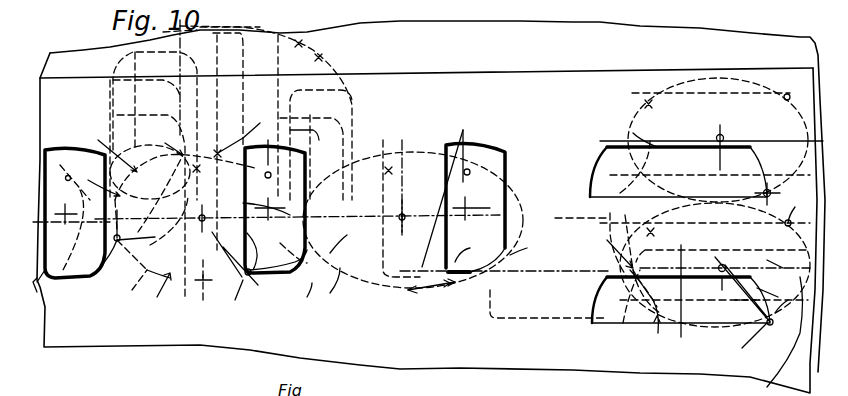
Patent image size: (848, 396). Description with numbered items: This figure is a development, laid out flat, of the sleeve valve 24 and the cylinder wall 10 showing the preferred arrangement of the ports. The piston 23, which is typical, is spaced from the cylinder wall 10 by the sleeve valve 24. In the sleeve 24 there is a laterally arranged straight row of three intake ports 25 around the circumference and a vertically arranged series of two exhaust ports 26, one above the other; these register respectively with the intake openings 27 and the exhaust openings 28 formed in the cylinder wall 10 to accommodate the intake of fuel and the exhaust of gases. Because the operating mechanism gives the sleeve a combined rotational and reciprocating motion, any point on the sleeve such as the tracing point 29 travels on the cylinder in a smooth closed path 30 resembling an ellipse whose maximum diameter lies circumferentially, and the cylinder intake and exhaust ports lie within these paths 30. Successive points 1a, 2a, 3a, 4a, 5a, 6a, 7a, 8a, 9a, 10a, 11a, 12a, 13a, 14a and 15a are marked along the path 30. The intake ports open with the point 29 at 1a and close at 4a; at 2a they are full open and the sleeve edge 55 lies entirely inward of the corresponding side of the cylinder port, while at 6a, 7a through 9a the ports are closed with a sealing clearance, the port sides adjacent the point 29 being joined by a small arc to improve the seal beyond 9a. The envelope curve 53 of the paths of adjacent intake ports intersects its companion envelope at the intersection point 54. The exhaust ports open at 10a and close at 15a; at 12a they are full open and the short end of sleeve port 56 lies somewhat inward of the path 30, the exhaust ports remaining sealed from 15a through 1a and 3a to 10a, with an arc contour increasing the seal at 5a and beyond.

The cylinder wall 10 is at (383, 35).
The piston 23 is at (311, 129).
The sleeve valve 24 is at (207, 340).
The intake ports 25 is at (63, 150).
The exhaust ports 26 is at (610, 150).
The intake openings 27 is at (197, 124).
The exhaust openings 28 is at (646, 103).
The tracing point 29 is at (253, 277).
The path 30 is at (714, 329).
The envelope curve 53 is at (298, 43).
The intersection point 54 is at (352, 52).
The sleeve edge 55 is at (468, 265).
The short end of sleeve port 56 is at (748, 307).
The point on path 1a is at (496, 321).
The point on path 2a is at (194, 298).
The point on path 3a is at (657, 320).
The point on path 4a is at (66, 271).
The point on path 5a is at (607, 250).
The point on path 6a is at (96, 181).
The point on path 7a is at (110, 151).
The point on path 8a is at (164, 146).
The point on path 9a is at (242, 138).
The point on path 10a is at (800, 208).
The point on path 11a is at (255, 206).
The point on path 12a is at (763, 260).
The point on path 13a is at (330, 253).
The point on path 14a is at (307, 297).
The point on path 15a is at (511, 311).